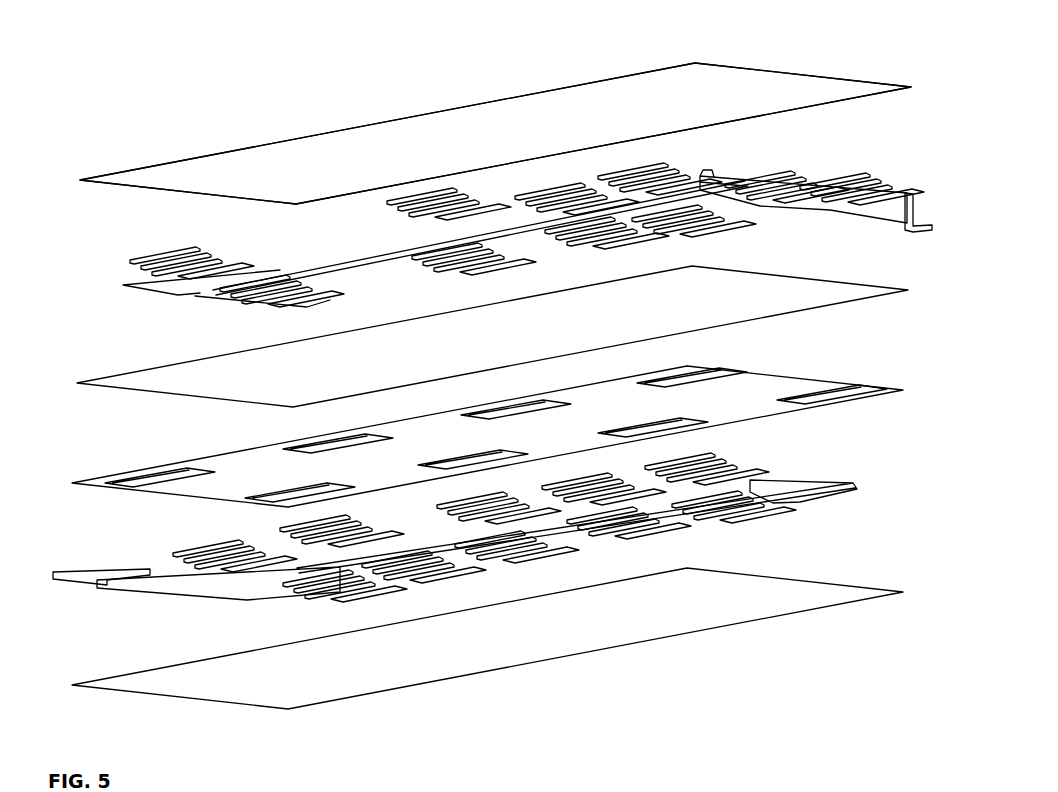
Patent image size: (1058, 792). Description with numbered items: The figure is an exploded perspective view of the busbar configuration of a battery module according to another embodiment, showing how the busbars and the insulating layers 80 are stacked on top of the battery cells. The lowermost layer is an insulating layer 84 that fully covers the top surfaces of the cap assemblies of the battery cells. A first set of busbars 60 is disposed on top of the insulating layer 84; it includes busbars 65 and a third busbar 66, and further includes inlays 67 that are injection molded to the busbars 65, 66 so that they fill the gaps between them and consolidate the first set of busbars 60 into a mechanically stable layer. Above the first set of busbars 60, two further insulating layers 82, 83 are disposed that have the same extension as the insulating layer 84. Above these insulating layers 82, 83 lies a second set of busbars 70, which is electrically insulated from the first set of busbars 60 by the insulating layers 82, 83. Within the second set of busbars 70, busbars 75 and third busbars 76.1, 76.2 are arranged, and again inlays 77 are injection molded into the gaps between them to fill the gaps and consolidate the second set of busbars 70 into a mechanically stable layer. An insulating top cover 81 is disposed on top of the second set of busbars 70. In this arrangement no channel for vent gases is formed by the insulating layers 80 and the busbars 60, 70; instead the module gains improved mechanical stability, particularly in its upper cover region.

The first set of busbars 60 is at (248, 600).
The busbars 65 is at (293, 562).
The third busbar 66 is at (107, 568).
The inlays 67 is at (563, 510).
The second set of busbars 70 is at (300, 313).
The busbars 75 is at (515, 223).
The third busbar 76.1 is at (753, 175).
The third busbar 76.2 is at (918, 193).
The inlays 77 is at (618, 203).
The insulating layers 80 is at (753, 85).
The insulating top cover 81 is at (495, 133).
The insulating layer 82 is at (757, 298).
The insulating layer 83 is at (760, 400).
The insulating layer 84 is at (760, 600).